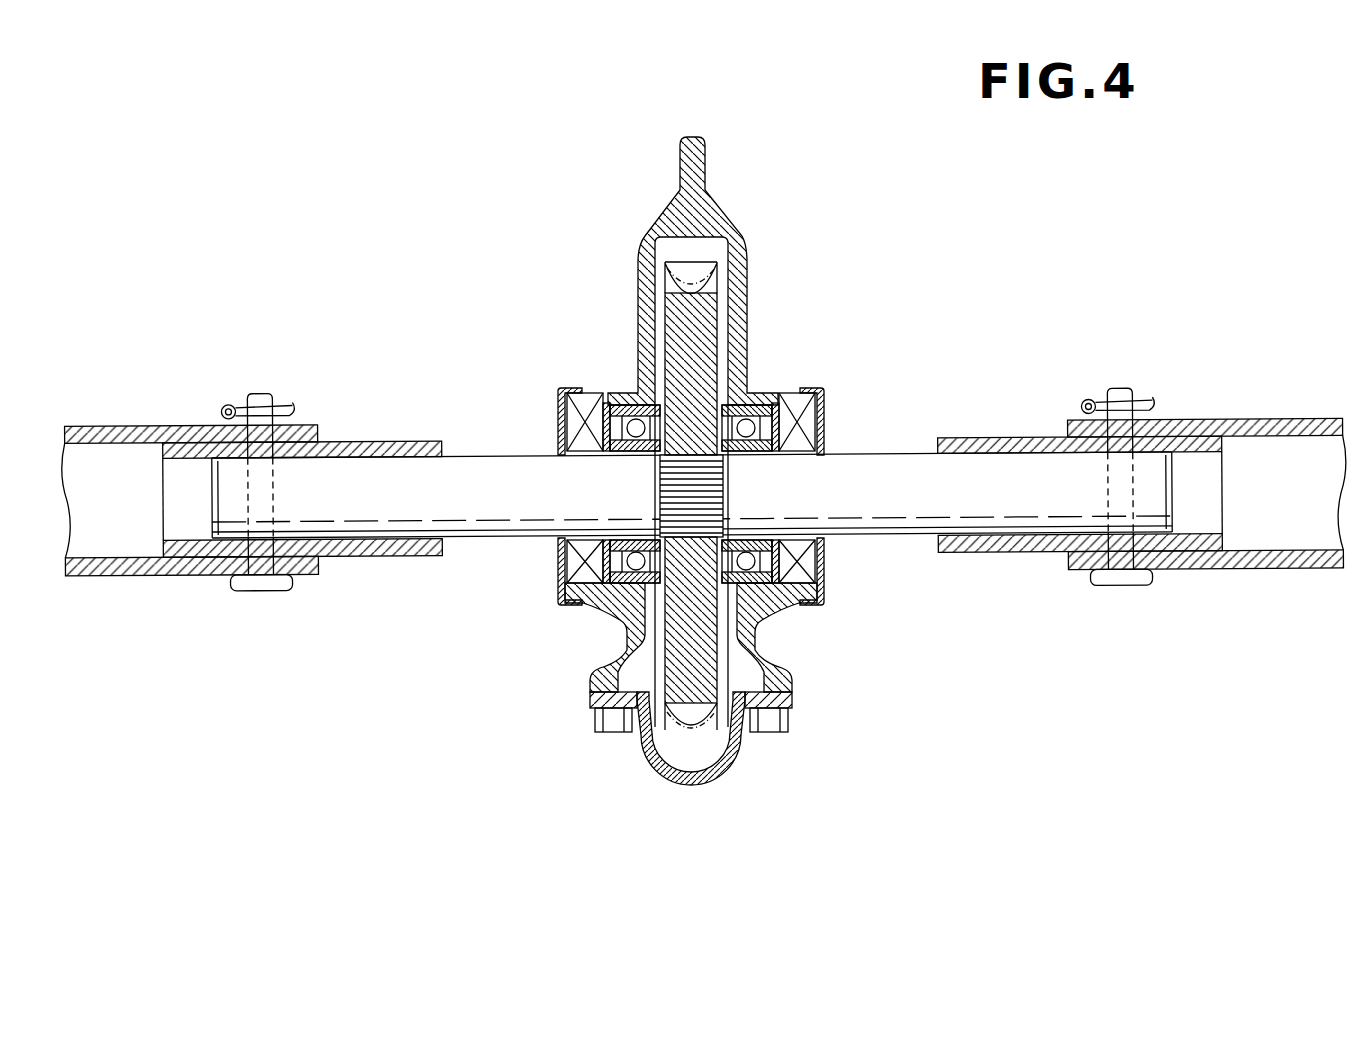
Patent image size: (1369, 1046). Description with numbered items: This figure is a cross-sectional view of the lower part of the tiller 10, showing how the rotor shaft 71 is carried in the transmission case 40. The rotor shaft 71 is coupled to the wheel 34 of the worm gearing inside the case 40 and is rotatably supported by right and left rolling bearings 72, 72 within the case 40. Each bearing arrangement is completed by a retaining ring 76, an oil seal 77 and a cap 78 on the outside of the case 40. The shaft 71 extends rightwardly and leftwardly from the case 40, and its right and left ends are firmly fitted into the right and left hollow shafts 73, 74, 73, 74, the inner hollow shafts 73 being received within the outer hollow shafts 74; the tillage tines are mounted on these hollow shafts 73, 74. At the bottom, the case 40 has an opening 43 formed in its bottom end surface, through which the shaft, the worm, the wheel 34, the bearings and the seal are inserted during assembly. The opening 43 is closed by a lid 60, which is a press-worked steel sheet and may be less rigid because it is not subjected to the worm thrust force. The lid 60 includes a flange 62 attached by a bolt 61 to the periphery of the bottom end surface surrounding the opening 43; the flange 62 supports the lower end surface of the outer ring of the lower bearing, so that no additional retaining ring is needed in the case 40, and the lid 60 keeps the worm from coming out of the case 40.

The steering assembly 10 is at (290, 213).
The wheel 34 is at (707, 645).
The transmission case 40 is at (722, 206).
The opening 43 is at (635, 673).
The lid 60 is at (688, 785).
The bolt 61 is at (612, 728).
The flange 62 is at (590, 697).
The rotor shaft 71 is at (910, 497).
The rolling bearing 72 is at (630, 386).
The hollow shaft 73 is at (352, 552).
The hollow shaft 74 is at (122, 562).
The retaining ring 76 is at (601, 392).
The oil seal 77 is at (567, 390).
The cap 78 is at (558, 418).